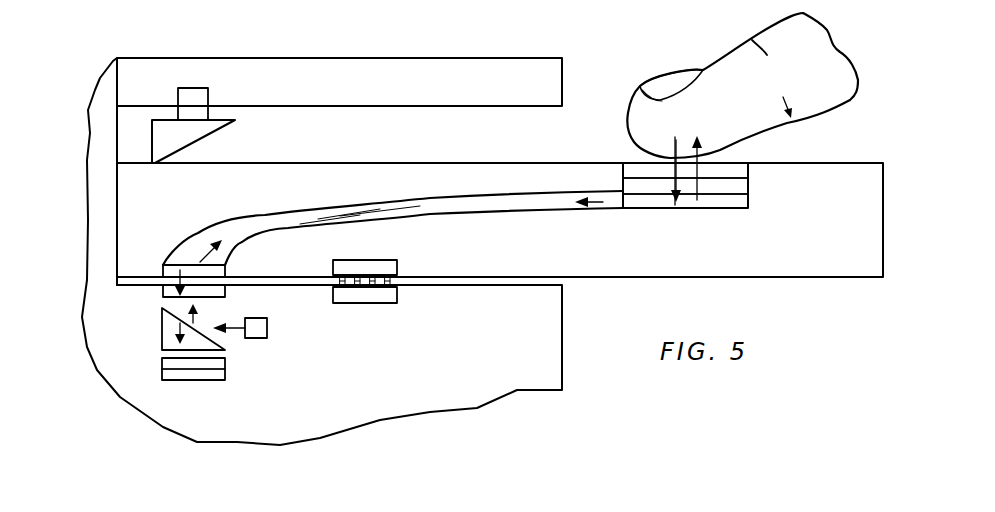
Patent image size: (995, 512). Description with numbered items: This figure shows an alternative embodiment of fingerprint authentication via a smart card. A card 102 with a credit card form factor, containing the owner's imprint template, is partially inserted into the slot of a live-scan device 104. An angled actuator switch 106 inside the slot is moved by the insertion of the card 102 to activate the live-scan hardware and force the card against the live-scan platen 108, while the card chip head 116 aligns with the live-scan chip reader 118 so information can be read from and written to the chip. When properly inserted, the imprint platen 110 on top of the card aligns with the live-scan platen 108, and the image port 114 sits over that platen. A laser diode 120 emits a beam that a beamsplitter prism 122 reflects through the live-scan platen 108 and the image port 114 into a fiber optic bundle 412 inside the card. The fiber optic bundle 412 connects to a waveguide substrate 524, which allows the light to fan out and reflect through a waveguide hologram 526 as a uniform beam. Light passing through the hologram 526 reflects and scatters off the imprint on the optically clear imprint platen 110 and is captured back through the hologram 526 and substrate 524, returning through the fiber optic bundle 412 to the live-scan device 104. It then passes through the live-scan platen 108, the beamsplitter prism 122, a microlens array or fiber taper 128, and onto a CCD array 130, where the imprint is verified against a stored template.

The card 102 is at (852, 158).
The live-scan device 104 is at (353, 58).
The actuator switch 106 is at (180, 97).
The live-scan platen 108 is at (225, 290).
The imprint platen 110 is at (623, 172).
The image port 114 is at (228, 268).
The card chip head 116 is at (397, 265).
The live-scan chip reader 118 is at (397, 295).
The laser diode 120 is at (267, 330).
The beamsplitter prism 122 is at (162, 330).
The microlens array or fiber taper 128 is at (225, 368).
The CCD array 130 is at (193, 373).
The fiber optic bundle 412 is at (555, 212).
The waveguide substrate 524 is at (722, 203).
The waveguide hologram 526 is at (743, 187).